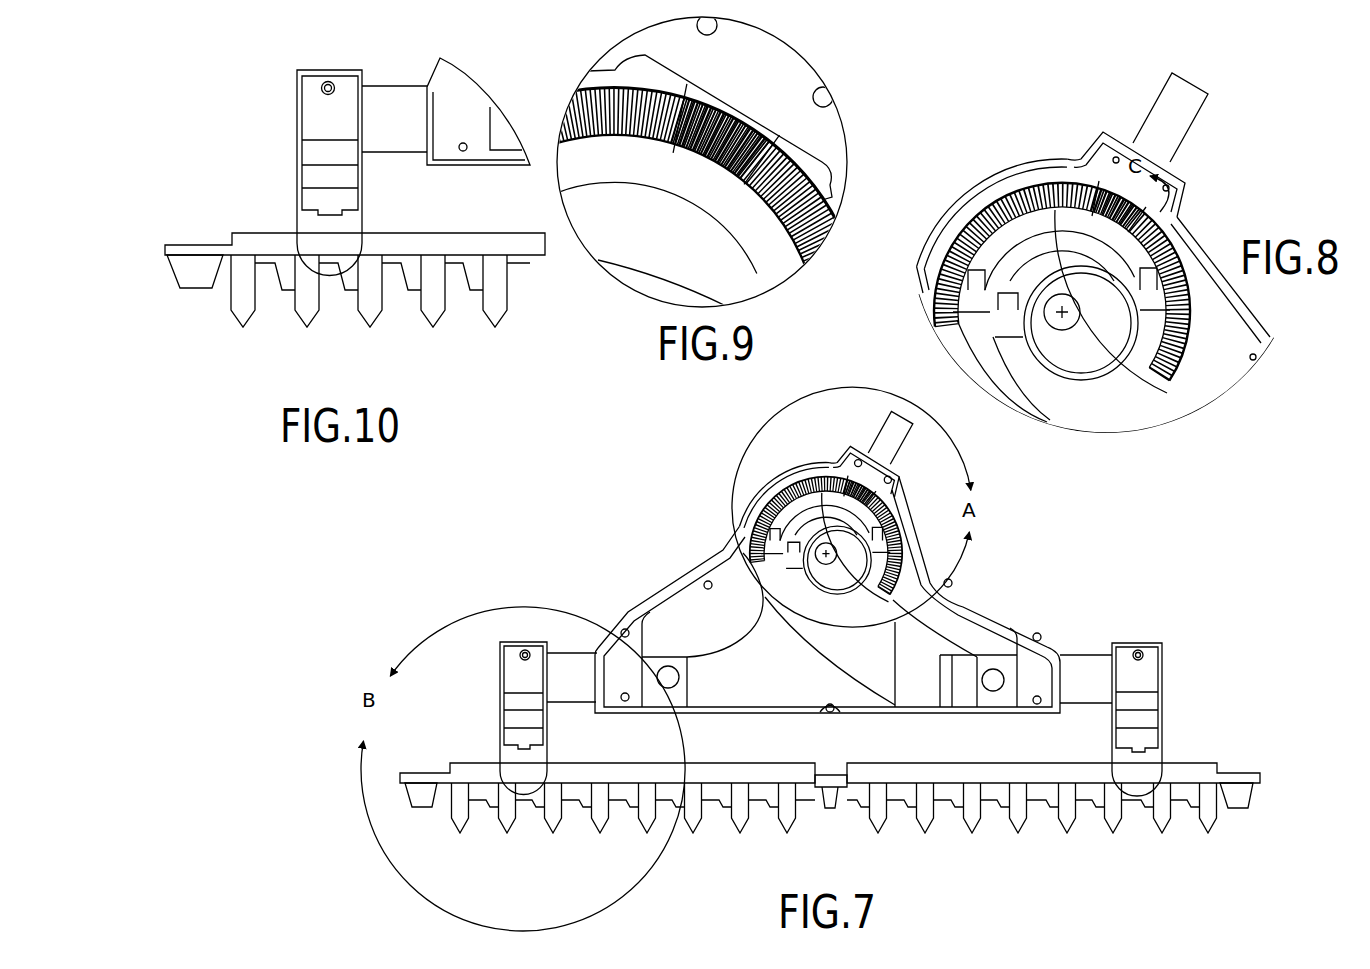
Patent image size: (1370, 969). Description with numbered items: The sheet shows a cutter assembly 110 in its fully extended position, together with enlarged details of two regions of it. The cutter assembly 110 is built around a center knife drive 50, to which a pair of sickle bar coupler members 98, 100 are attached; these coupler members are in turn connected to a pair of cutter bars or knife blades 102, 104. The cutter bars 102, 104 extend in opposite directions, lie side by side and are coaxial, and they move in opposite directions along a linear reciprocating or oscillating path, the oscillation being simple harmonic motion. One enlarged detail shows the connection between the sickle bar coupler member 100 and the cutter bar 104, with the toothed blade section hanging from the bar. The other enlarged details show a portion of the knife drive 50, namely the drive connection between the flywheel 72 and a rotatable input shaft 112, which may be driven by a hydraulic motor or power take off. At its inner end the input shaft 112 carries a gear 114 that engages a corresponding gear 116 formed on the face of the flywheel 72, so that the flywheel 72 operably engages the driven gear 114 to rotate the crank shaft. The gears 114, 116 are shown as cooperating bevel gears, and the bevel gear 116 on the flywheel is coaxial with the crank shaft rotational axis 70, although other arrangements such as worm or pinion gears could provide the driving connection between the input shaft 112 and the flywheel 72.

In FIG. 7, the center knife drive 50 is at (700, 560).
In FIG. 8, the crank shaft rotational axis 70 is at (1062, 312).
In FIG. 7, the crank shaft rotational axis 70 is at (830, 560).
In FIG. 9, the flywheel 72 is at (762, 275).
In FIG. 8, the flywheel 72 is at (1005, 257).
In FIG. 7, the flywheel 72 is at (826, 536).
In FIG. 7, the sickle bar coupler member 98 is at (1150, 676).
In FIG. 10, the sickle bar coupler member 100 is at (330, 255).
In FIG. 7, the sickle bar coupler member 100 is at (513, 678).
In FIG. 7, the cutter bar 102 is at (1040, 836).
In FIG. 10, the cutter bar 104 is at (414, 345).
In FIG. 7, the cutter bar 104 is at (755, 832).
In FIG. 7, the cutter assembly 110 is at (830, 655).
In FIG. 8, the input shaft 112 is at (1157, 130).
In FIG. 7, the input shaft 112 is at (890, 437).
In FIG. 9, the gear 114 is at (703, 170).
In FIG. 8, the gear 114 is at (1148, 203).
In FIG. 7, the gear 114 is at (860, 491).
In FIG. 9, the gear 116 is at (808, 242).
In FIG. 8, the gear 116 is at (1027, 185).
In FIG. 7, the gear 116 is at (784, 495).